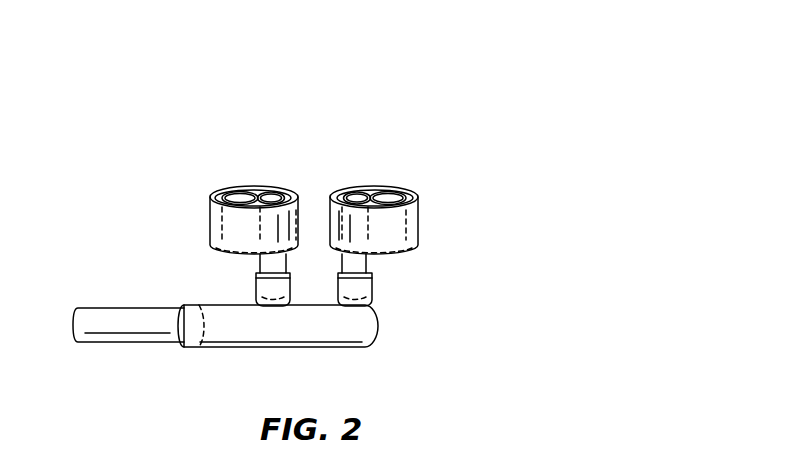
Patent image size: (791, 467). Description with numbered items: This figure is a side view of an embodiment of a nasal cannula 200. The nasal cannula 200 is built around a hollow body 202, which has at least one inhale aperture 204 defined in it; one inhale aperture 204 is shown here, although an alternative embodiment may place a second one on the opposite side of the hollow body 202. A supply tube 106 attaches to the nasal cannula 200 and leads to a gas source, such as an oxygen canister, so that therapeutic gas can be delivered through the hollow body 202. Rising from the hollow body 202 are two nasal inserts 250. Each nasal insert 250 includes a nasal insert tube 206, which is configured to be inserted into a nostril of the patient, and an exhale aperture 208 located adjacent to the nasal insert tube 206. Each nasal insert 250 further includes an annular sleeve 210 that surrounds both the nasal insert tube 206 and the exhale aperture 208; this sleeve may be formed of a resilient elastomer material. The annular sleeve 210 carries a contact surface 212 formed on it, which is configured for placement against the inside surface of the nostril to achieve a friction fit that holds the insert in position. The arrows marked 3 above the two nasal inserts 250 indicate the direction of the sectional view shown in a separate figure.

The nasal cannula 200 is at (340, 90).
The hollow body 202 is at (334, 331).
The inhale aperture 204 is at (197, 306).
The supply tube 106 is at (123, 328).
The nasal insert tube 206 is at (276, 196).
The exhale aperture 208 is at (236, 222).
The annular sleeve 210 is at (268, 197).
The contact surface 212 is at (245, 244).
The nasal insert 250 is at (210, 229).
The section line for FIG. 3 is at (233, 148).